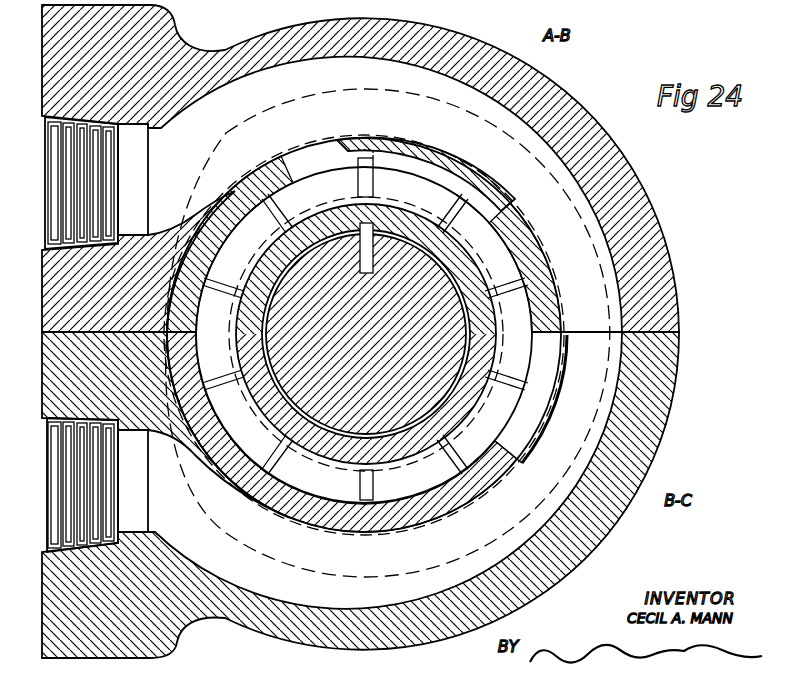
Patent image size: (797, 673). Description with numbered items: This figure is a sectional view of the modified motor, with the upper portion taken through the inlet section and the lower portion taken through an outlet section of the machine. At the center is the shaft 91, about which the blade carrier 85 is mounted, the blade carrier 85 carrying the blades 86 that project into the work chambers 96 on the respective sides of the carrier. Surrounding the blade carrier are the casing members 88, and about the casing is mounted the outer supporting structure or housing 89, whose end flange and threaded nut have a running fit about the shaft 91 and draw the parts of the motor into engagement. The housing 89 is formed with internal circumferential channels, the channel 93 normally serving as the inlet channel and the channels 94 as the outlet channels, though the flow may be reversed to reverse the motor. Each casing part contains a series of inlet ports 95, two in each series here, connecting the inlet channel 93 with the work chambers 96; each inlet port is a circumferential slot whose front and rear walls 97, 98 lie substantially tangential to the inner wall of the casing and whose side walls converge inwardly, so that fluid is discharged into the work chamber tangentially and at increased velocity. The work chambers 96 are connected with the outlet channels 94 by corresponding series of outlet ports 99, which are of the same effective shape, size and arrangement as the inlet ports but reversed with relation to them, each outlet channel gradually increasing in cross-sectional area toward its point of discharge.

The blade carrier 85 is at (480, 318).
The blades 86 is at (503, 378).
The casing members 88 is at (543, 402).
The housing 89 is at (557, 100).
The shaft 91 is at (427, 384).
The inlet channel 93 is at (217, 113).
The outlet channels 94 is at (222, 549).
The inlet ports 95 is at (300, 157).
The work chambers 96 is at (413, 166).
The front wall 97 is at (340, 137).
The rear wall 98 is at (256, 176).
The outlet ports 99 is at (468, 160).